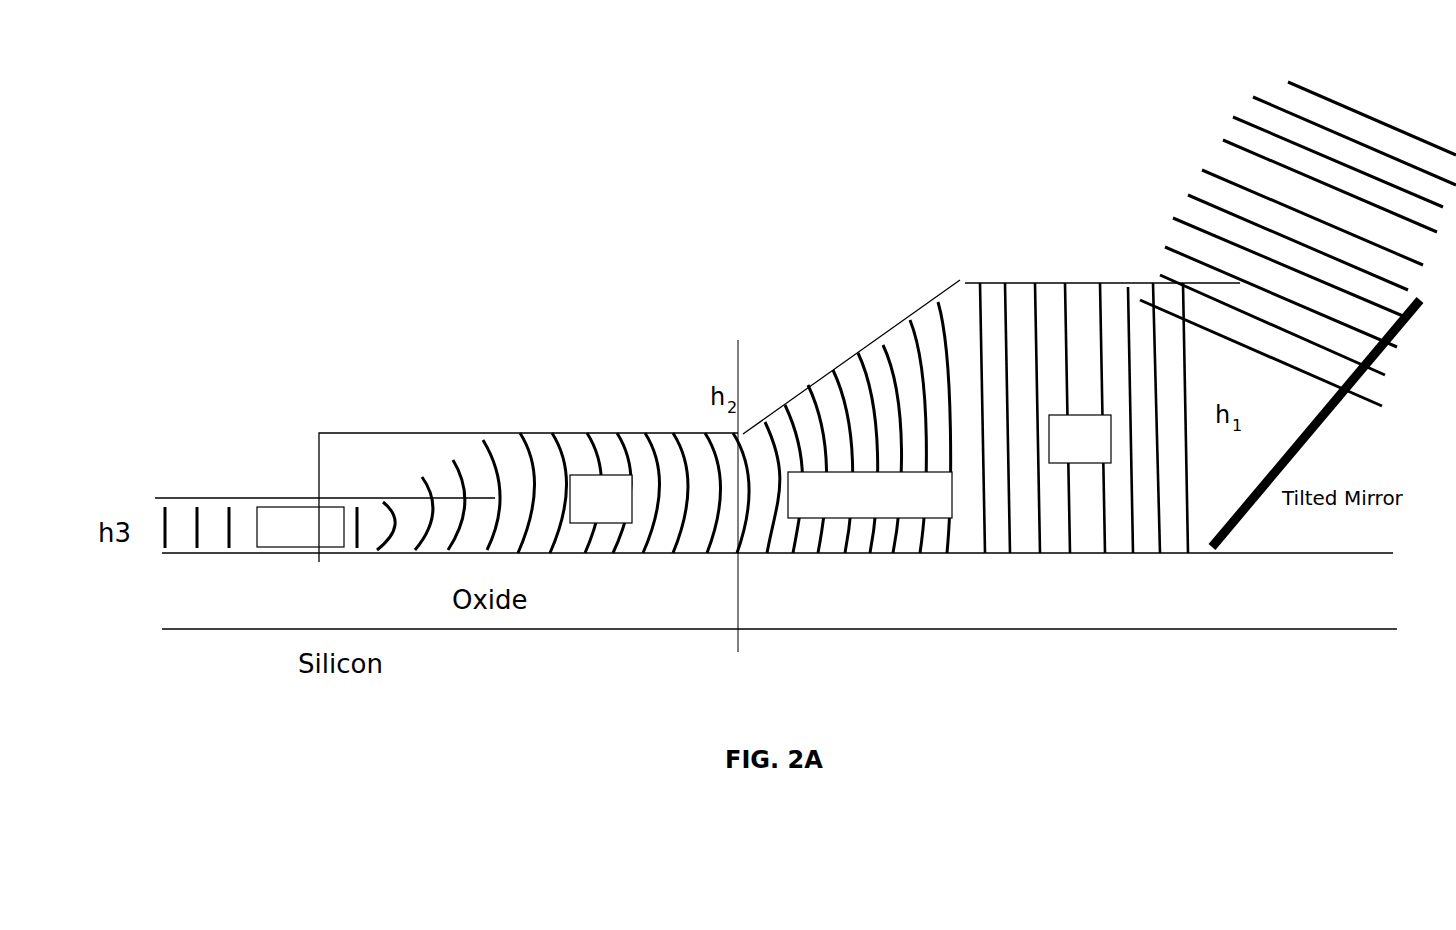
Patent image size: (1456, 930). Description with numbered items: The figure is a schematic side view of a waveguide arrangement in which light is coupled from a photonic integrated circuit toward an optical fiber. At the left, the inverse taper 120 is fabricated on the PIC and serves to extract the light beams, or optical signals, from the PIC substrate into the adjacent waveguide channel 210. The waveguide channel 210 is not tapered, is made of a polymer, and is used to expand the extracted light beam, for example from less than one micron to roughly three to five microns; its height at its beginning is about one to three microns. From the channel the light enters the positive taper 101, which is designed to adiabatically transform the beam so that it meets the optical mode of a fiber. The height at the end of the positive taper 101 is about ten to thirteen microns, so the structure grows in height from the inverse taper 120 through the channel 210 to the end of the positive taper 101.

The inverse taper 120 is at (256, 488).
The waveguide channel 210 is at (536, 432).
The positive taper 101 is at (1050, 292).